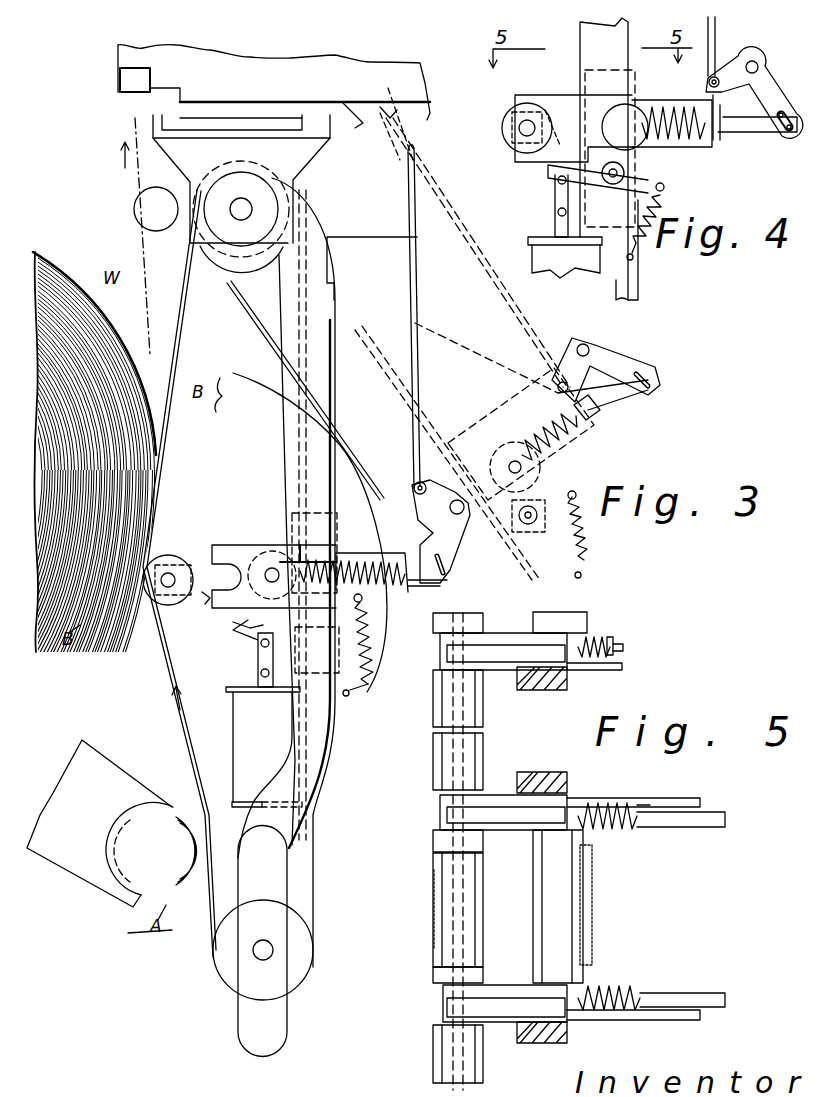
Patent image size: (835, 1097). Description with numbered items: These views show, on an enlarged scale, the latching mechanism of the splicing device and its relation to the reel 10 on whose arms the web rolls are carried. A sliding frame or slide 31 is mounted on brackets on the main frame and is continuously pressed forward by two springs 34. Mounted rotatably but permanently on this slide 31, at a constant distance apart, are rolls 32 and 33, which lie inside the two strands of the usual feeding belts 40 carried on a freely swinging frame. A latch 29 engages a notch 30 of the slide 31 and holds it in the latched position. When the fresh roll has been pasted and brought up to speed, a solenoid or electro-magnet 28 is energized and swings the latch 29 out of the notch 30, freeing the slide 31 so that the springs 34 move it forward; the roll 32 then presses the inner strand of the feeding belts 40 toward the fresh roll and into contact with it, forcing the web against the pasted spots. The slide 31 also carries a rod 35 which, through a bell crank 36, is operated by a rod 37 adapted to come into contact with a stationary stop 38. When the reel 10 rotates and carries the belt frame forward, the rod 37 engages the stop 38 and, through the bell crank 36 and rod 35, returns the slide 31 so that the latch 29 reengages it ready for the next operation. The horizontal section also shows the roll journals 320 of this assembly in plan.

In FIG. 3, the reel 10 is at (120, 770).
In FIG. 3, the solenoids or electro-magnets 28 is at (264, 772).
In FIG. 4, the solenoids or electro-magnets 28 is at (575, 275).
In FIG. 3, the latch 29 is at (250, 632).
In FIG. 4, the latch 29 is at (552, 176).
In FIG. 3, the notch 30 is at (204, 600).
In FIG. 3, the sliding frame 31 is at (210, 566).
In FIG. 4, the sliding frame 31 is at (565, 105).
In FIG. 5, the sliding frame 31 is at (516, 647).
In FIG. 3, the roll 32 is at (172, 558).
In FIG. 4, the roll 32 is at (503, 118).
In FIG. 5, the roll 32 is at (433, 628).
In FIG. 3, the roll 33 is at (268, 552).
In FIG. 4, the roll 33 is at (640, 148).
In FIG. 5, the roll 33 is at (526, 628).
In FIG. 3, the spring 34 is at (384, 580).
In FIG. 4, the spring 34 is at (686, 144).
In FIG. 5, the spring 34 is at (605, 642).
In FIG. 3, the rod 35 is at (447, 582).
In FIG. 4, the rod 35 is at (762, 136).
In FIG. 5, the rod 35 is at (623, 648).
In FIG. 3, the bell crank 36 is at (452, 540).
In FIG. 4, the bell crank 36 is at (772, 90).
In FIG. 3, the rod 37 is at (414, 480).
In FIG. 4, the rod 37 is at (716, 40).
In FIG. 3, the stop 38 is at (378, 124).
In FIG. 3, the feeding belts 40 is at (272, 338).
In FIG. 5, the feeding belts 40 is at (437, 898).
In FIG. 5, the roller 320 is at (474, 752).